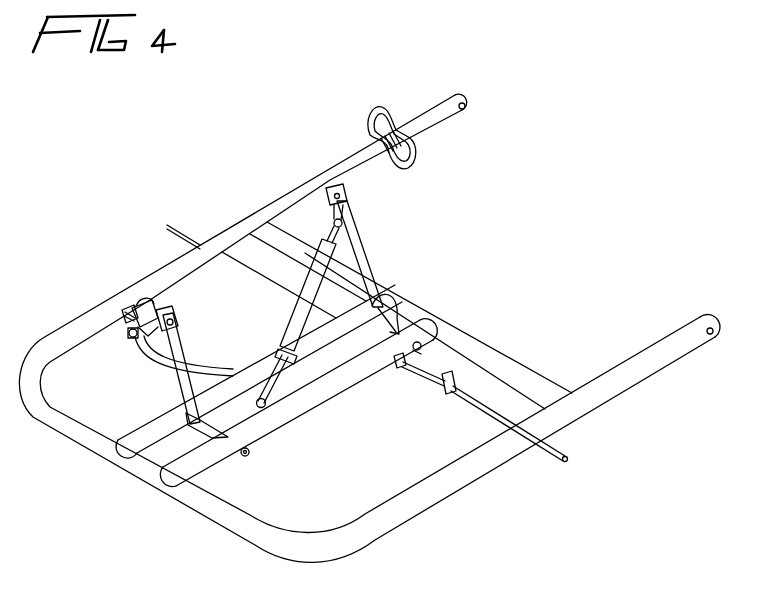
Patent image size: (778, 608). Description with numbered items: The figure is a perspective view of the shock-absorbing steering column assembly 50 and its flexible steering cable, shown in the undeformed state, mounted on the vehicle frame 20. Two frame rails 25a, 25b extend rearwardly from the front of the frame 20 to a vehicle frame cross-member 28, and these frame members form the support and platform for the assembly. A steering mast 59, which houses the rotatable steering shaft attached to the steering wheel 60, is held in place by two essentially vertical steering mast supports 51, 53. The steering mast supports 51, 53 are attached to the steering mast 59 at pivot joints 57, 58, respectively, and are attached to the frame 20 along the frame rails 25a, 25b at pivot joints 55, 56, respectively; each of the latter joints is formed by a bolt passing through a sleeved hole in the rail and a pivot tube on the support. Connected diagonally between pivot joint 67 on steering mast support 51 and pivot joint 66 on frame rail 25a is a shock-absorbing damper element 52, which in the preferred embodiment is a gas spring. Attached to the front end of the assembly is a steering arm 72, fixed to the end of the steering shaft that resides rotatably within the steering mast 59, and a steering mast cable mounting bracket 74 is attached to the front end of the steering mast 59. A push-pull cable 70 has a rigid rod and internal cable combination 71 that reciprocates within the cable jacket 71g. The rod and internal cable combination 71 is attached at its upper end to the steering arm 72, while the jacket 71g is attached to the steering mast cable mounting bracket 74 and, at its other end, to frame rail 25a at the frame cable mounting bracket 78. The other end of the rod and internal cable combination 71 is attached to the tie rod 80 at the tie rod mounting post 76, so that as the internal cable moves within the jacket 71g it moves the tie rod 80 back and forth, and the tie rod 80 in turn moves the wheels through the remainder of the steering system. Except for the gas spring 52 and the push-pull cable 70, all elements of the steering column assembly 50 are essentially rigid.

The frame 20 is at (193, 500).
The frame rail 25a is at (324, 402).
The frame rail 25b is at (266, 346).
The vehicle frame cross-member 28 is at (536, 381).
The shock-absorbing steering column assembly 50 is at (362, 178).
The steering mast support 51 is at (367, 253).
The shock-absorbing damper element 52 is at (306, 235).
The steering mast support 53 is at (174, 324).
The pivot joint 55 is at (422, 344).
The pivot joint 56 is at (248, 458).
The pivot joint 57 is at (348, 196).
The pivot joint 58 is at (167, 312).
The steering mast 59 is at (367, 158).
The steering wheel 60 is at (380, 106).
The pivot joint 66 is at (266, 406).
The pivot joint 67 is at (312, 246).
The push-pull cable 70 is at (149, 371).
The rod and internal cable combination 71 is at (132, 337).
The cable jacket 71g is at (152, 352).
The steering arm 72 is at (128, 312).
The steering mast cable mounting bracket 74 is at (165, 353).
The tie rod mounting post 76 is at (450, 392).
The frame cable mounting bracket 78 is at (400, 368).
The tie rod 80 is at (480, 402).